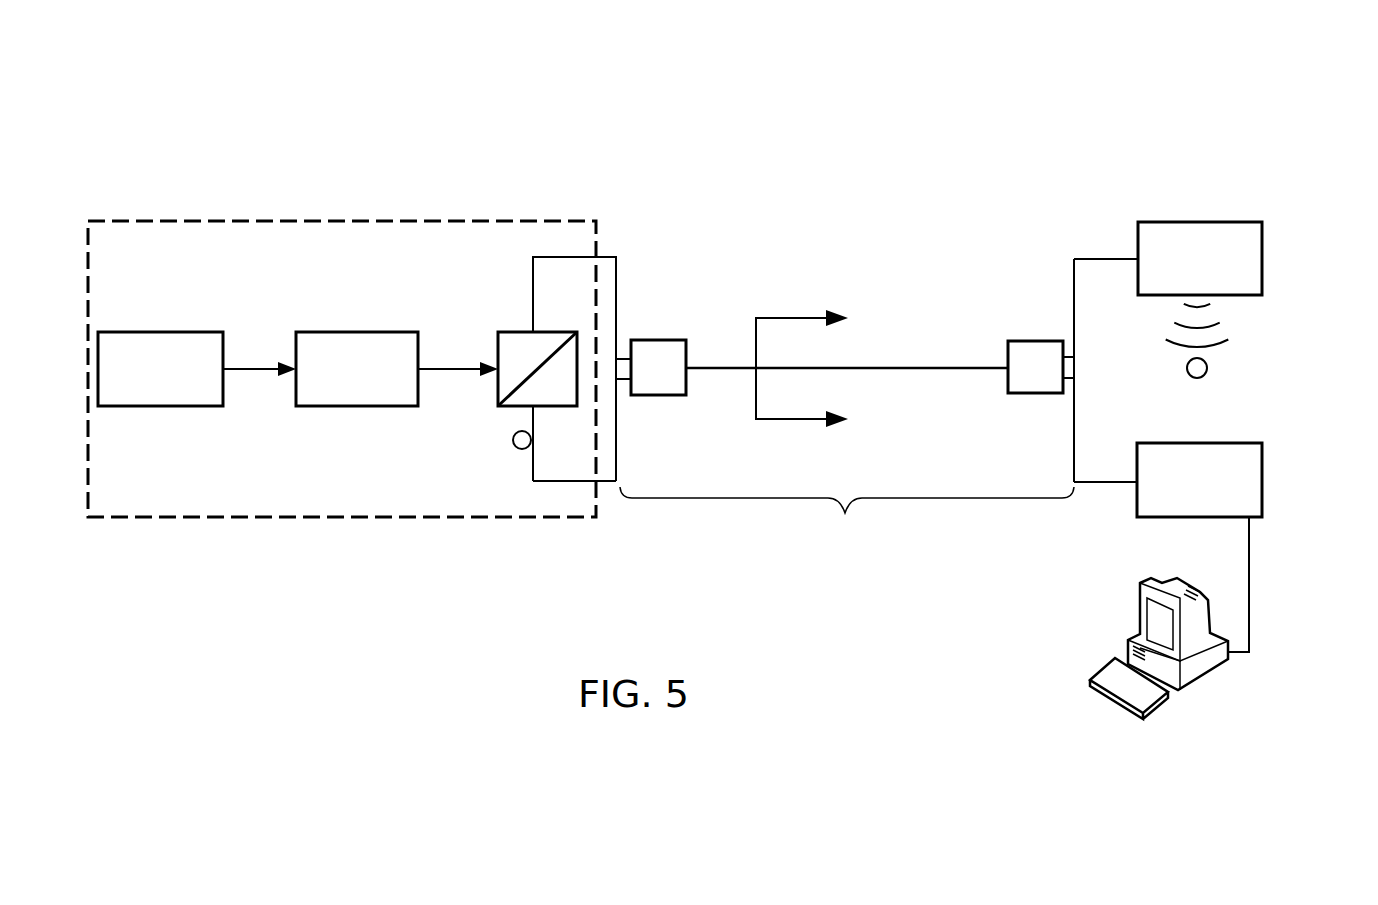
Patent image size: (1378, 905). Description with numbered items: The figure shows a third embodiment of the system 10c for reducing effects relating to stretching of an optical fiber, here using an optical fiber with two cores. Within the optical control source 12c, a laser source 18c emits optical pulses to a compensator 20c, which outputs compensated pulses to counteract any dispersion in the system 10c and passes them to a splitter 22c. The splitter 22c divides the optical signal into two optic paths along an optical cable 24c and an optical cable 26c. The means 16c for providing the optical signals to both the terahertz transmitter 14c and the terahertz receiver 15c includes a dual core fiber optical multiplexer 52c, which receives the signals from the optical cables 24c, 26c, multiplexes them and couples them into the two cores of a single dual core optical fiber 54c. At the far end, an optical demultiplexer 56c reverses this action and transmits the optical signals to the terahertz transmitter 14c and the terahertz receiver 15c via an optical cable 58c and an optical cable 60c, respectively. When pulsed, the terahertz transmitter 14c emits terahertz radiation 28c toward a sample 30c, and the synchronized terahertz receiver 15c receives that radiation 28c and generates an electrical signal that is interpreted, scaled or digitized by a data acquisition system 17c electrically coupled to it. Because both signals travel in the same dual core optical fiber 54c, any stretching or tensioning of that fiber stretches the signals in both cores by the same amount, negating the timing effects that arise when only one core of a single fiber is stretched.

The system 10c is at (921, 110).
The optical control source 12c is at (423, 221).
The terahertz transmitter 14c is at (1245, 222).
The terahertz receiver 15c is at (1200, 443).
The means for providing optical signals 16c is at (847, 516).
The data acquisition system 17c is at (1202, 592).
The laser source 18c is at (124, 332).
The compensator 20c is at (319, 332).
The splitter 22c is at (498, 388).
The optical cable 24c is at (546, 257).
The optical cable 26c is at (565, 481).
The terahertz radiation 28c is at (1242, 325).
The sample 30c is at (1203, 377).
The dual core fiber optical multiplexer 52c is at (665, 340).
The dual core optical fiber 54c is at (882, 368).
The optical demultiplexer 56c is at (1028, 341).
The optical cable 58c is at (1100, 259).
The optical cable 60c is at (1117, 482).